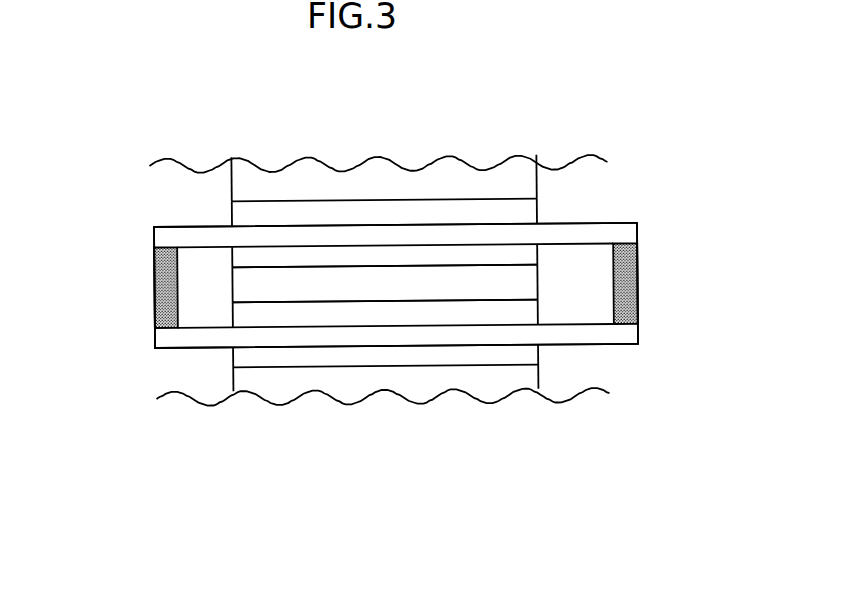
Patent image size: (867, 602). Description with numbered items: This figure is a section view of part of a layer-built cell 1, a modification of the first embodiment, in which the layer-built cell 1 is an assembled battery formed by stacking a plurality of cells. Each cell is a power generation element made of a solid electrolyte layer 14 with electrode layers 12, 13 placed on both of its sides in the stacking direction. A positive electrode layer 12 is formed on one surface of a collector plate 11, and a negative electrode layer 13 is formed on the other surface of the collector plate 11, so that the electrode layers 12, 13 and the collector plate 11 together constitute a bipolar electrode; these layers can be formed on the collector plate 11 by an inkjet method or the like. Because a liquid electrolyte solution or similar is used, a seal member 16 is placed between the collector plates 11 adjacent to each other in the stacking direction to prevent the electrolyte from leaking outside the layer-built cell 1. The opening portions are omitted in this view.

The layer-built cell 1 is at (122, 333).
The collector plate 11 is at (593, 236).
The positive electrode layer 12 is at (468, 212).
The negative electrode layer 13 is at (253, 262).
The solid electrolyte layer 14 is at (493, 286).
The seal member 16 is at (166, 282).